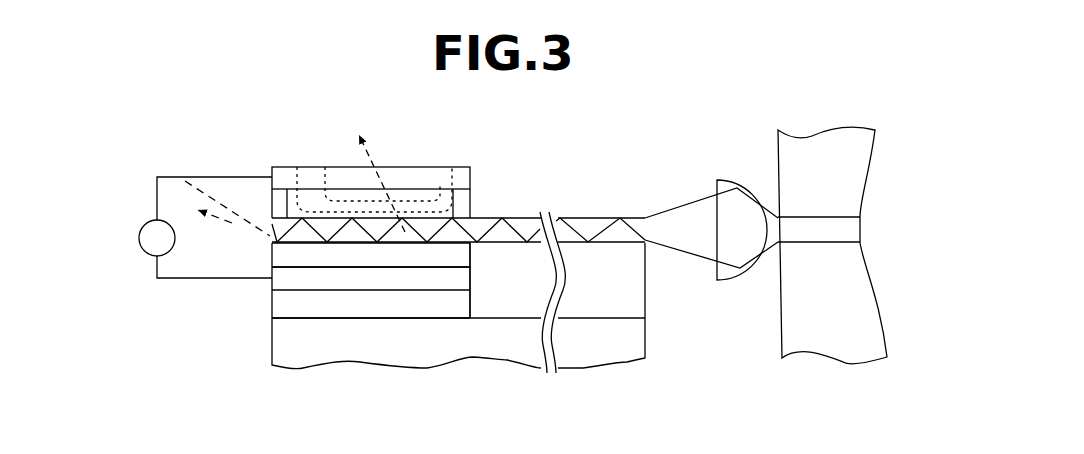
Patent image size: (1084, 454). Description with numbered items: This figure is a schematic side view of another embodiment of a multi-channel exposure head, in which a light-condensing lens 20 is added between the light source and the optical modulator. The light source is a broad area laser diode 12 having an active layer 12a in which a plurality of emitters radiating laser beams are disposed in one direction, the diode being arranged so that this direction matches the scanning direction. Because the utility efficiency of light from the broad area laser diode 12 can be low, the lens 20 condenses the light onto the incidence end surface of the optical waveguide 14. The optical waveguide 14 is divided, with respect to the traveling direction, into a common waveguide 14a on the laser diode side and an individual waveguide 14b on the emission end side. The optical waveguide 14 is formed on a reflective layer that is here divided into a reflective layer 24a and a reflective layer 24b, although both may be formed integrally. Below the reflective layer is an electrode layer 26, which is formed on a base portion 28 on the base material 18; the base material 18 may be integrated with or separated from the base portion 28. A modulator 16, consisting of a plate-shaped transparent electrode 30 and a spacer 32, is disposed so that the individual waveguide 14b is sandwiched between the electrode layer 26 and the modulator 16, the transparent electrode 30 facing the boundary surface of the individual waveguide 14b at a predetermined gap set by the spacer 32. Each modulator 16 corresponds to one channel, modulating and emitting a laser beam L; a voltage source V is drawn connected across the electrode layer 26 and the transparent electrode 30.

The broad area laser diode 12 is at (813, 120).
The active layer 12a is at (843, 232).
The optical waveguide 14 is at (499, 252).
The common waveguide 14a is at (583, 218).
The individual waveguide 14b is at (350, 250).
The modulator 16 is at (410, 163).
The base material 18 is at (470, 347).
The lens 20 is at (727, 180).
The reflective layer 24a is at (600, 305).
The reflective layer 24b is at (420, 262).
The electrode layer 26 is at (313, 280).
The base portion 28 is at (282, 300).
The transparent electrode 30 is at (310, 192).
The spacer 32 is at (278, 202).
The laser beam L is at (183, 180).
The voltage source V is at (205, 227).